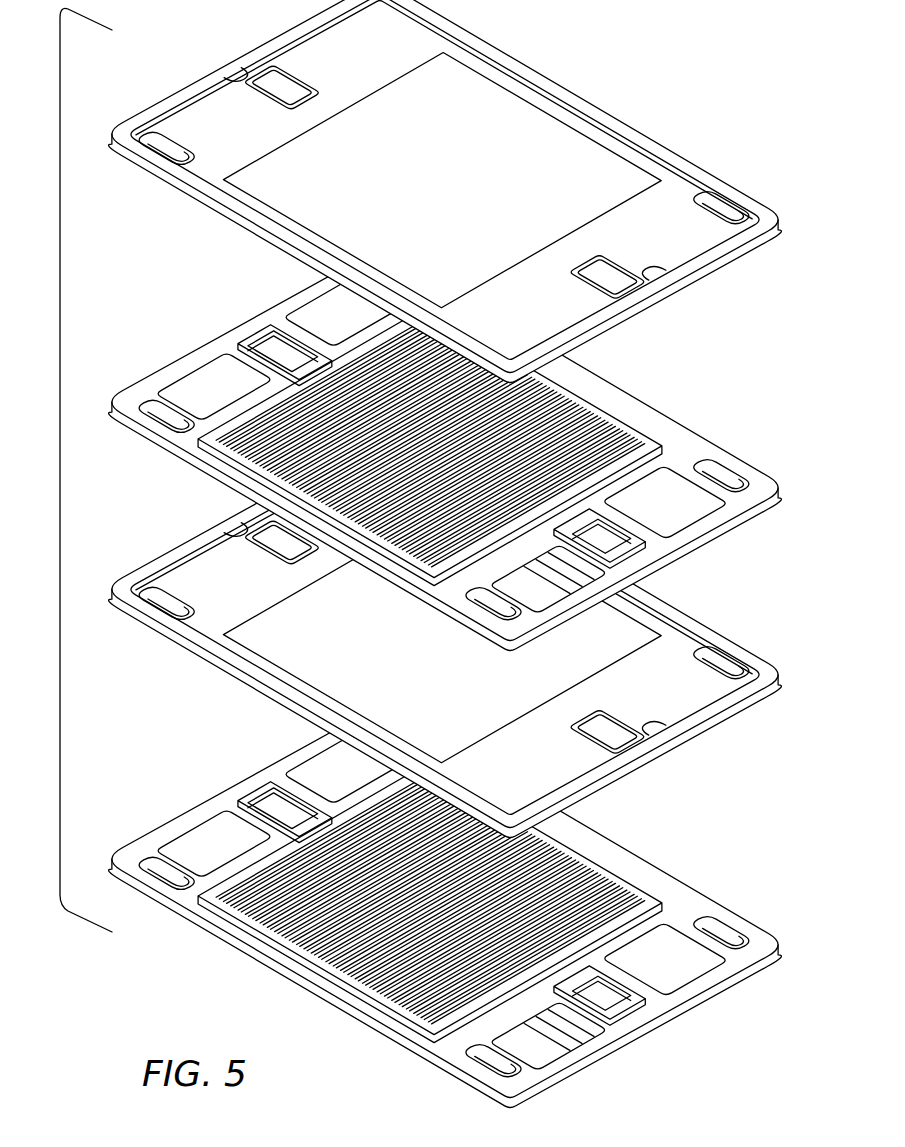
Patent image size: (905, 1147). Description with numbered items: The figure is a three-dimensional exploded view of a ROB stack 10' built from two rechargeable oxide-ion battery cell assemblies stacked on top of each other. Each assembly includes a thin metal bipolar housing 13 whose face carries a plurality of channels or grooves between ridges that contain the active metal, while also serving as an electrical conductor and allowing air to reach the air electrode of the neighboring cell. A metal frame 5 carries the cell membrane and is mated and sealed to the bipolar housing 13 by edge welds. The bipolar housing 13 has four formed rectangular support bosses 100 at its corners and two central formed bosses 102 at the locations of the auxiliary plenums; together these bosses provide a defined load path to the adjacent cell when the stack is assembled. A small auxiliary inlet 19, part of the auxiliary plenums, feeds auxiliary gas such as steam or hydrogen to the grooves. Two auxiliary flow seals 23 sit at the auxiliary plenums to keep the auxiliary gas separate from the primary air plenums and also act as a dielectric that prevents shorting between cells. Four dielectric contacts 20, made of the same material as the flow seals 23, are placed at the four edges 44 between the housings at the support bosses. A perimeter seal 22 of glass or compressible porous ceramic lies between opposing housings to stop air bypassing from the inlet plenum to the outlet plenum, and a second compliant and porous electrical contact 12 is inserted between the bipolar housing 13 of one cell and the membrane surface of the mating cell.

The ROB stack 10' is at (65, 470).
The metal frame 5 is at (170, 640).
The edges 44 is at (110, 597).
The perimeter seal 22 is at (647, 140).
The second compliant and porous electrical contact 12 is at (547, 123).
The dielectric contacts 20 is at (165, 148).
The auxiliary flow seals 23 is at (247, 80).
The metal bipolar housing 13 is at (620, 390).
The rectangular support bosses 100 is at (718, 470).
The central formed bosses 102 is at (257, 330).
The auxiliary inlet 19 is at (612, 998).